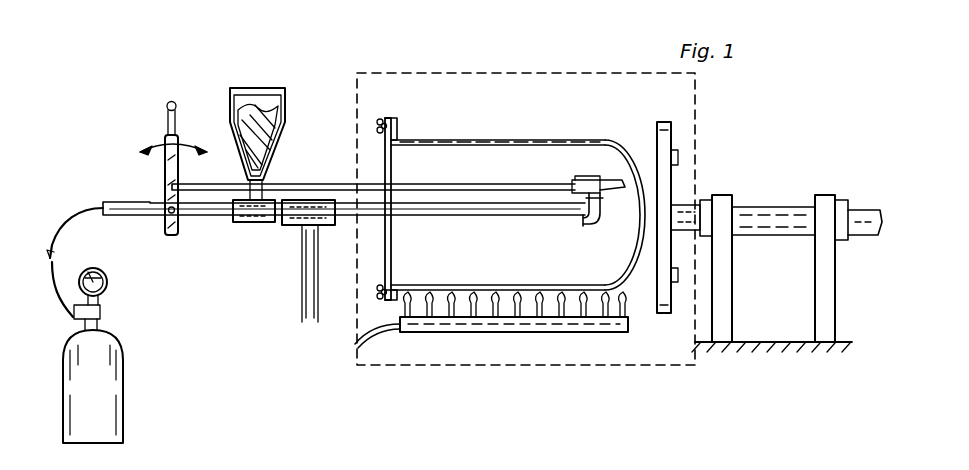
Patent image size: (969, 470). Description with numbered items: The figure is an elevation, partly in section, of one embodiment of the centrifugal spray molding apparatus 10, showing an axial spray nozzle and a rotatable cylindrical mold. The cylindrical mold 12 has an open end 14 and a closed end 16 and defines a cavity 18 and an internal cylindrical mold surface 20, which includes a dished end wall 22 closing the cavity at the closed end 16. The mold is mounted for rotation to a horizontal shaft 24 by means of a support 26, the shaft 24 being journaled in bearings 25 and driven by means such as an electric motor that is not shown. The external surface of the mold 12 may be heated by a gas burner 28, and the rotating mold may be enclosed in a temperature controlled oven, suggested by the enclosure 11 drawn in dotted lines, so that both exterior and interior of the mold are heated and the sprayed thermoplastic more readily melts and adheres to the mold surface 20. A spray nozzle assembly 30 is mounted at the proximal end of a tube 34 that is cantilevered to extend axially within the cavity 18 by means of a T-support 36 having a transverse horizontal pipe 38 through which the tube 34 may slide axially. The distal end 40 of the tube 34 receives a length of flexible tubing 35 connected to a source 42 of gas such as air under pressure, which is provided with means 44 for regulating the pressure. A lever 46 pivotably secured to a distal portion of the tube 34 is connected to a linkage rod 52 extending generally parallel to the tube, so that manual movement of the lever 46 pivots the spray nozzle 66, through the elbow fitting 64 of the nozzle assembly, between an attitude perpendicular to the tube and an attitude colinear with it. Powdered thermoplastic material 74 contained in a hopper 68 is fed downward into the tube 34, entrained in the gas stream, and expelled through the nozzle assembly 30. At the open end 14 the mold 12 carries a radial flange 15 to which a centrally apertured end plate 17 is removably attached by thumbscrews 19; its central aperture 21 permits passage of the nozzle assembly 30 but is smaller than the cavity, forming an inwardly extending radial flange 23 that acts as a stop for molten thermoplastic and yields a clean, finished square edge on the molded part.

The centrifugal spray molding apparatus 10 is at (388, 113).
The enclosure 11 is at (425, 366).
The cylindrical mold 12 is at (540, 128).
The open end 14 is at (385, 150).
The radial flange 15 is at (398, 128).
The closed end 16 is at (541, 223).
The end plate 17 is at (394, 117).
The cavity 18 is at (512, 180).
The thumbscrews 19 is at (378, 122).
The internal cylindrical mold surface 20 is at (561, 141).
The central aperture 21 is at (386, 160).
The dished end wall 22 is at (640, 258).
The inwardly extending radial flange 23 is at (392, 240).
The horizontal shaft 24 is at (683, 230).
The bearings 25 is at (812, 202).
The support 26 is at (659, 315).
The gas burner 28 is at (520, 334).
The spray nozzle assembly 30 is at (631, 148).
The tube 34 is at (432, 206).
The flexible tubing 35 is at (60, 225).
The T-support 36 is at (281, 237).
The transverse horizontal pipe 38 is at (300, 203).
The distal end 40 is at (114, 188).
The source of gas 42 is at (127, 370).
The pressure regulating means 44 is at (101, 313).
The lever 46 is at (167, 125).
The linkage rod 52 is at (205, 191).
The elbow 64 is at (610, 212).
The spray nozzle 66 is at (625, 186).
The hopper 68 is at (234, 100).
The powdered thermoplastic material 74 is at (250, 107).